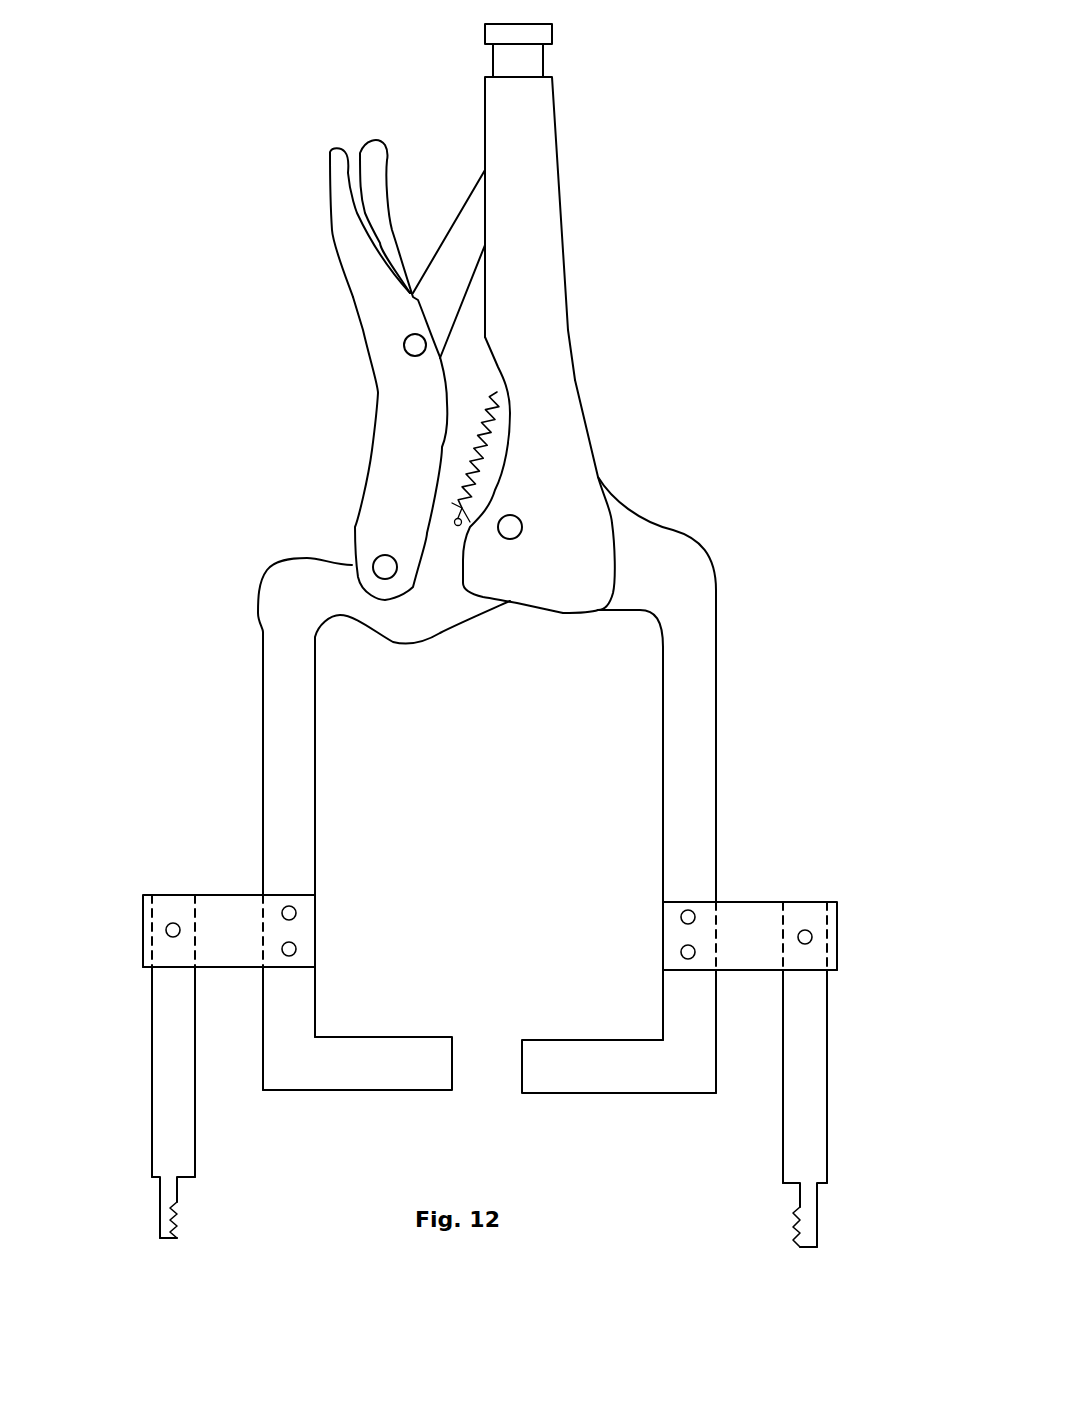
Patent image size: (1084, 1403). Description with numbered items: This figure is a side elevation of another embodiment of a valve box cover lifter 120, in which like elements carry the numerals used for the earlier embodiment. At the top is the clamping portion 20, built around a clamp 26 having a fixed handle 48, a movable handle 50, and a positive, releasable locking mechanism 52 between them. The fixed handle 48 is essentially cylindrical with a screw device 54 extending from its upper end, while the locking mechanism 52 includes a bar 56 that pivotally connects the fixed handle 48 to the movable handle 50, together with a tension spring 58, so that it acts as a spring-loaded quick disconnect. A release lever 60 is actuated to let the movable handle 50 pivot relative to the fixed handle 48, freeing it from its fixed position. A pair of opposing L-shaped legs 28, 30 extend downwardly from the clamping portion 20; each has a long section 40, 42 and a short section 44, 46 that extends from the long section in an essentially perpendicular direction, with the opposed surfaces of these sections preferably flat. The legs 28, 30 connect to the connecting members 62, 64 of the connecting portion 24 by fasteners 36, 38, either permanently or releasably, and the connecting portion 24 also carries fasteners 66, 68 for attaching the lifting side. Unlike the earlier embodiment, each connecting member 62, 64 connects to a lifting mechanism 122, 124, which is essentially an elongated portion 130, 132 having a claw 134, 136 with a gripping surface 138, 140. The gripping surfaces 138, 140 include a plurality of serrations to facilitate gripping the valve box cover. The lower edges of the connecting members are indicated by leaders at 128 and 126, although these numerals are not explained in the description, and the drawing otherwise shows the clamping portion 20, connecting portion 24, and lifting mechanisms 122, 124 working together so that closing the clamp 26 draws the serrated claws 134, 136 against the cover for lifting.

The clamping portion 20 is at (517, 23).
The screw device 54 is at (523, 63).
The fixed handle 48 is at (533, 167).
The clamp 26 is at (543, 275).
The locking mechanism 52 is at (480, 183).
The bar 56 is at (458, 240).
The release lever 60 is at (377, 163).
The movable handle 50 is at (350, 258).
The tension spring 58 is at (505, 415).
The leg 30 is at (290, 577).
The leg 28 is at (672, 565).
The long section 42 is at (305, 700).
The long section 40 is at (670, 690).
The short section 46 is at (340, 1079).
The short section 44 is at (570, 1068).
The connecting portion 24 is at (263, 895).
The connecting member 64 is at (218, 909).
The left bracket bottom 128 is at (145, 966).
The fastener 38 is at (296, 912).
The fastener 68 is at (166, 928).
The connecting member 62 is at (760, 909).
The right bracket bottom 126 is at (833, 971).
The fastener 36 is at (682, 916).
The fastener 66 is at (808, 931).
The elongated portion 132 is at (172, 1068).
The lifting mechanism 122 is at (165, 1190).
The gripping surface 140 is at (178, 1215).
The claw 136 is at (160, 1228).
The elongated portion 130 is at (817, 1083).
The lifting mechanism 124 is at (827, 1184).
The gripping surface 138 is at (798, 1222).
The claw 134 is at (806, 1250).
The valve box cover lifter 120 is at (667, 228).